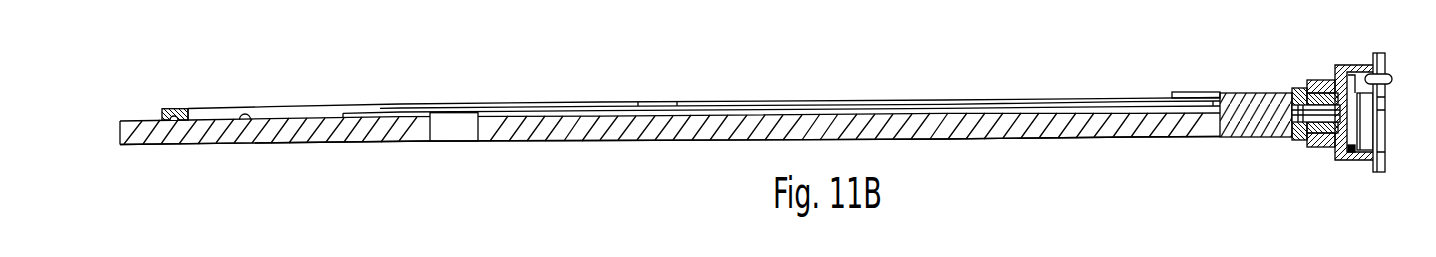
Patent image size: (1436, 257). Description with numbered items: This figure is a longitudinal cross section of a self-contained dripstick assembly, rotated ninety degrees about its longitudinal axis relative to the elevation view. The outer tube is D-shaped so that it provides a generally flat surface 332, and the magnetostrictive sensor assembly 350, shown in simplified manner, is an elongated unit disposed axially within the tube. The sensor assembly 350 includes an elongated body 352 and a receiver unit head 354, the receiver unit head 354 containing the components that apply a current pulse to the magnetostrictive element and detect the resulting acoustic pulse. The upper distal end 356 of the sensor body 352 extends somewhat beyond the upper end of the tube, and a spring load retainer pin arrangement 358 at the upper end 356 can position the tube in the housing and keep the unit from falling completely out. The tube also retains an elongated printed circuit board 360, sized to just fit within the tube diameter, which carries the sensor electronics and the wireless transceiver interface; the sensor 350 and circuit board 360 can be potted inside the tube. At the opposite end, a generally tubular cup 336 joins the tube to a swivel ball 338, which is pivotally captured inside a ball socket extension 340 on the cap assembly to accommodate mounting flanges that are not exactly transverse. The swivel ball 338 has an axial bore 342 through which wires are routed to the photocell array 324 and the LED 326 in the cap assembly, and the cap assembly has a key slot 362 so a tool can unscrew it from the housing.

The photocell array 324 is at (1378, 152).
The LED 326 is at (1394, 78).
The flat surface 332 is at (287, 107).
The tubular cup 336 is at (1202, 92).
The swivel ball 338 is at (1341, 150).
The ball socket extension 340 is at (1333, 80).
The axial bore 342 is at (1290, 115).
The magnetostrictive sensor assembly 350 is at (582, 126).
The elongated body 352 is at (250, 124).
The receiver unit head 354 is at (1243, 107).
The upper distal end 356 is at (136, 148).
The spring load retainer pin arrangement 358 is at (158, 107).
The printed circuit board 360 is at (589, 103).
The key slot 362 is at (1383, 110).